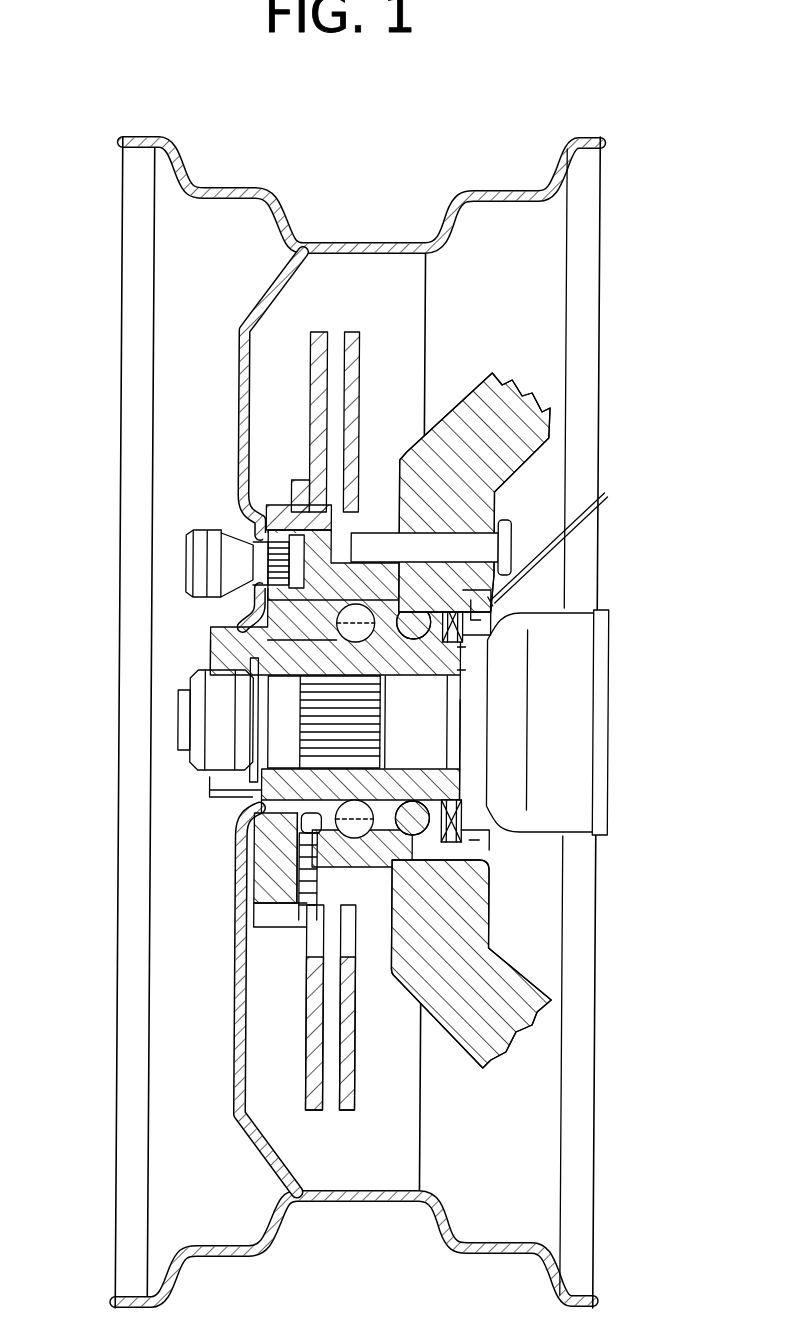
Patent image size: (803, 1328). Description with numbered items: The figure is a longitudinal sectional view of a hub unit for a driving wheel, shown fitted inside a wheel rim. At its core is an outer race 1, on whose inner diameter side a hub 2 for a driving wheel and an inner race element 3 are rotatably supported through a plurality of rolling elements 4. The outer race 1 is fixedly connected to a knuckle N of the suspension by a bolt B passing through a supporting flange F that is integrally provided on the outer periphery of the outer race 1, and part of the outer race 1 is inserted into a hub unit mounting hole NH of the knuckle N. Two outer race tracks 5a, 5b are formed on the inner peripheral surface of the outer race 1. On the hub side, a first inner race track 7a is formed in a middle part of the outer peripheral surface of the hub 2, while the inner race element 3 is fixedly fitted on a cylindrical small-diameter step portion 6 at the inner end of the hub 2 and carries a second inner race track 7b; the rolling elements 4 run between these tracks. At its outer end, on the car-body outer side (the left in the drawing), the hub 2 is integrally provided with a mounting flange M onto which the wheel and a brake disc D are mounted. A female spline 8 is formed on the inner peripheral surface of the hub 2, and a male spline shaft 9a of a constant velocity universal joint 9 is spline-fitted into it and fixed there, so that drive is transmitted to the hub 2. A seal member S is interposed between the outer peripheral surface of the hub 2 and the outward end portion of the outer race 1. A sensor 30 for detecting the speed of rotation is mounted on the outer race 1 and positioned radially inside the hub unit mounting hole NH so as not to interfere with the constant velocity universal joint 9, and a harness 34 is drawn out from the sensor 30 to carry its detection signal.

The outer race 1 is at (492, 950).
The hub for a driving wheel 2 is at (280, 785).
The inner race element 3 is at (462, 650).
The rolling elements 4 is at (337, 587).
The outer race track 5a is at (337, 617).
The outer race track 5b is at (412, 592).
The small-diameter step portion 6 is at (462, 668).
The first inner race track 7a is at (350, 838).
The second inner race track 7b is at (440, 768).
The female spline 8 is at (253, 748).
The constant velocity universal joint 9 is at (565, 628).
The male spline shaft 9a is at (300, 712).
The sensor 30 is at (524, 605).
The harness 34 is at (600, 495).
The brake disc D is at (353, 332).
The supporting flange F is at (353, 523).
The bolt B is at (470, 540).
The knuckle N is at (548, 432).
The hub unit mounting hole NH is at (478, 845).
The seal member S is at (325, 792).
The mounting flange M is at (317, 863).